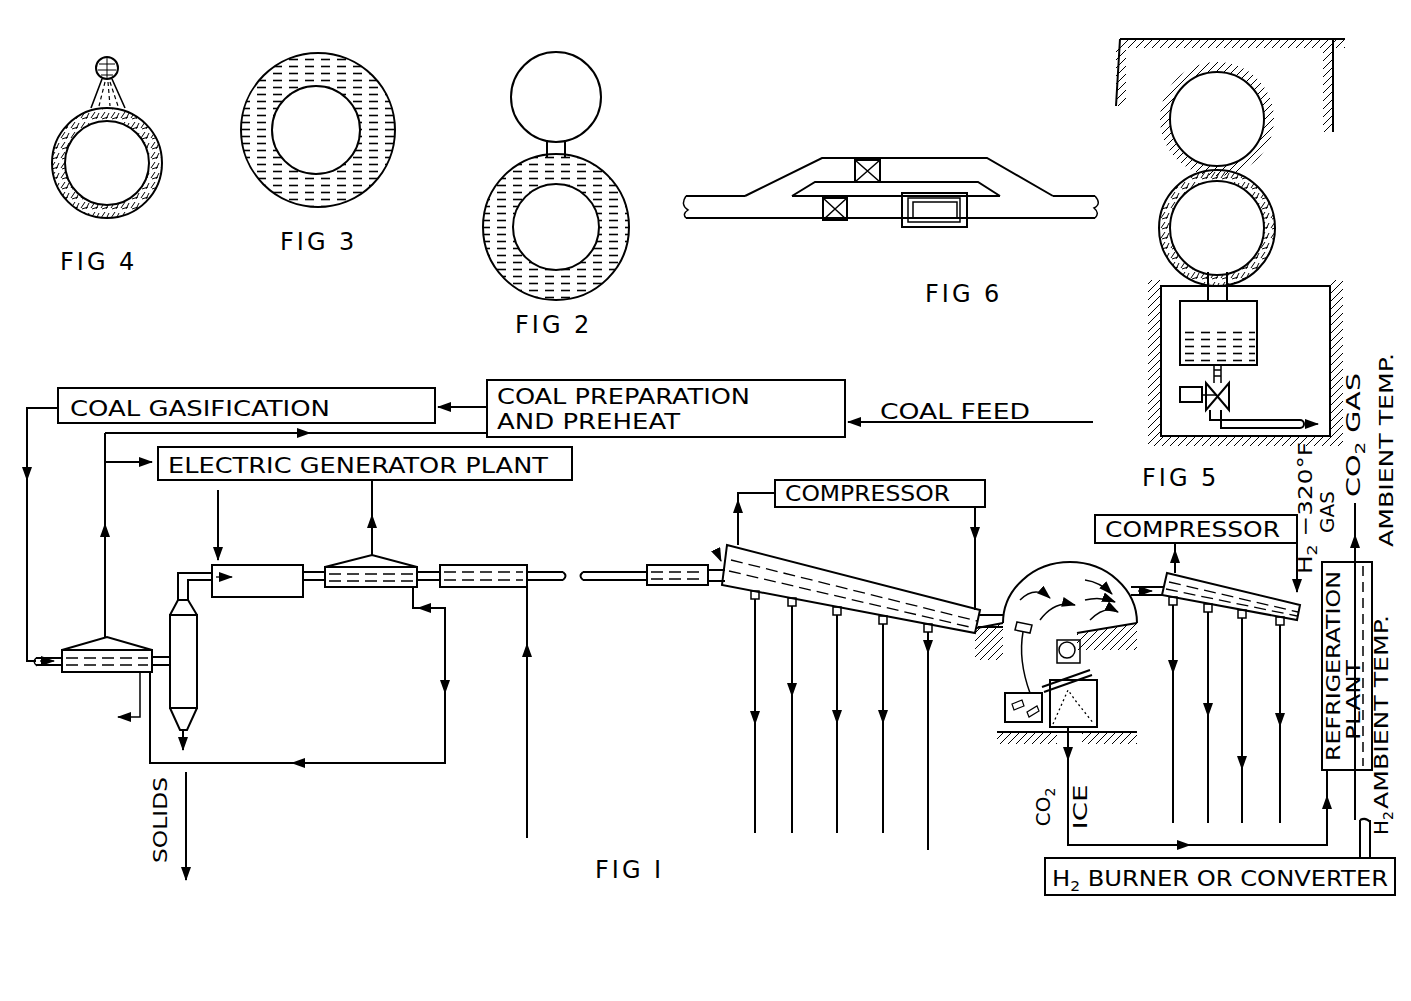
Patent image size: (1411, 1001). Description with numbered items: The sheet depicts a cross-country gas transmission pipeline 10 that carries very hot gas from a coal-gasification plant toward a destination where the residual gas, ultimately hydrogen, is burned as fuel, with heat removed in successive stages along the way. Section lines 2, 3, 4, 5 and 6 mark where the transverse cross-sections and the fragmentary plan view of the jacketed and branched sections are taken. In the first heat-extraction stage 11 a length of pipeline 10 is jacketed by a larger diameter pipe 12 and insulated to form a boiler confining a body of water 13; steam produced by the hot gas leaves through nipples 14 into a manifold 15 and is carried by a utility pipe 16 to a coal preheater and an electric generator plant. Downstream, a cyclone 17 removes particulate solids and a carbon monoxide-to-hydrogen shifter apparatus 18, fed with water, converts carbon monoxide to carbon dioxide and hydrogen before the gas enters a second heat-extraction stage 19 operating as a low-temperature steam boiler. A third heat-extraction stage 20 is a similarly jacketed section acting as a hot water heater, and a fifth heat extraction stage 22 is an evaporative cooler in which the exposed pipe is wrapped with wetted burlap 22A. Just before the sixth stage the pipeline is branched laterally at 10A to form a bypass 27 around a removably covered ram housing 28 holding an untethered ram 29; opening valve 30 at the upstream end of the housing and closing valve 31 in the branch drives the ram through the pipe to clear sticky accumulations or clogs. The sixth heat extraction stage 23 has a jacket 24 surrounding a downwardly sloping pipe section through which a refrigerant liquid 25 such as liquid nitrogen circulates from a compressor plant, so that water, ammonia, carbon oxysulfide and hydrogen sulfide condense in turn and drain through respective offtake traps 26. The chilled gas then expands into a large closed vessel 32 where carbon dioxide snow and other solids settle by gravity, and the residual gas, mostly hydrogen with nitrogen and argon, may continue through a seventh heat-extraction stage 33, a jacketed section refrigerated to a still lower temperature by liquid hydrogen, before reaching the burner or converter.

In FIG. 1, the section line 2 is at (140, 637).
In FIG. 1, the section line 3 is at (505, 555).
In FIG. 1, the section line 4 is at (662, 557).
In FIG. 1, the section line 5 is at (792, 552).
In FIG. 1, the section line 6 is at (700, 548).
In FIG. 4, the gas pipeline 10 is at (139, 120).
In FIG. 3, the gas pipeline 10 is at (348, 90).
In FIG. 2, the gas pipeline 10 is at (578, 192).
In FIG. 5, the gas pipeline 10 is at (1270, 188).
In FIG. 1, the gas pipeline 10 is at (42, 670).
In FIG. 6, the lateral branch 10A is at (752, 194).
In FIG. 1, the first heat-extraction stage 11 is at (78, 648).
In FIG. 3, the larger diameter pipe 12 is at (386, 162).
In FIG. 2, the larger diameter pipe 12 is at (618, 262).
In FIG. 3, the body of water 13 is at (366, 165).
In FIG. 2, the body of water 13 is at (492, 218).
In FIG. 2, the nipples 14 is at (545, 148).
In FIG. 2, the manifold 15 is at (598, 78).
In FIG. 1, the utility pipe 16 is at (105, 478).
In FIG. 1, the cyclone 17 is at (198, 682).
In FIG. 1, the carbon monoxide-to-hydrogen shifter apparatus 18 is at (240, 598).
In FIG. 1, the second heat-extraction stage 19 is at (366, 588).
In FIG. 1, the third heat-extraction stage 20 is at (462, 566).
In FIG. 1, the fifth heat extraction stage 22 is at (672, 565).
In FIG. 4, the burlap 22A is at (140, 200).
In FIG. 1, the sixth heat extraction stage 23 is at (832, 575).
In FIG. 5, the jacket 24 is at (1276, 228).
In FIG. 5, the refrigerant liquid 25 is at (1160, 255).
In FIG. 5, the offtake traps 26 is at (1230, 372).
In FIG. 1, the offtake traps 26 is at (746, 597).
In FIG. 6, the bypass 27 is at (912, 158).
In FIG. 6, the ram housing 28 is at (968, 226).
In FIG. 6, the ram 29 is at (925, 228).
In FIG. 1, the ram 29 is at (1047, 660).
In FIG. 6, the valve 30 is at (838, 222).
In FIG. 6, the valve 31 is at (868, 160).
In FIG. 1, the closed vessel 32 is at (1058, 562).
In FIG. 1, the seventh heat-extraction stage 33 is at (1263, 597).